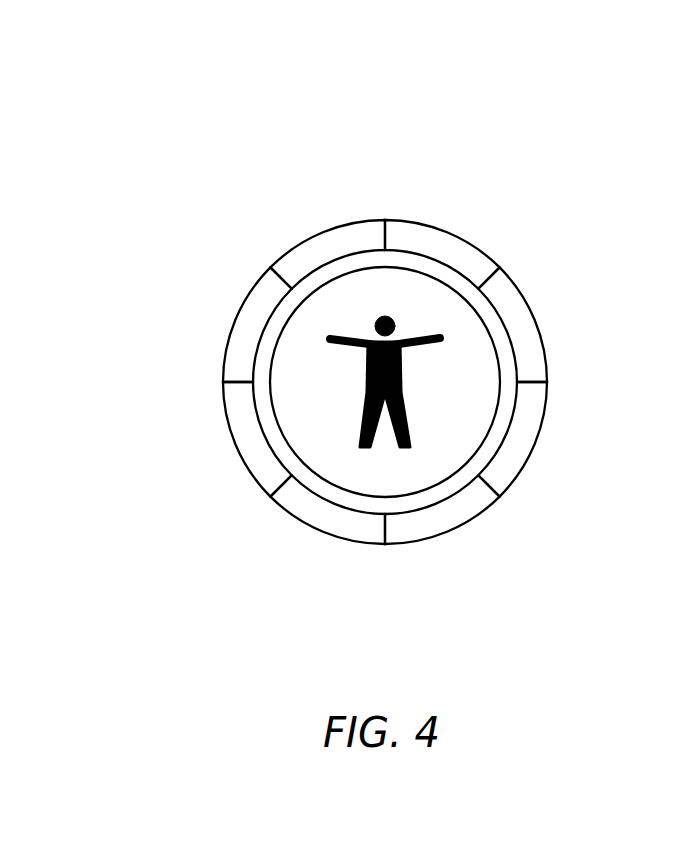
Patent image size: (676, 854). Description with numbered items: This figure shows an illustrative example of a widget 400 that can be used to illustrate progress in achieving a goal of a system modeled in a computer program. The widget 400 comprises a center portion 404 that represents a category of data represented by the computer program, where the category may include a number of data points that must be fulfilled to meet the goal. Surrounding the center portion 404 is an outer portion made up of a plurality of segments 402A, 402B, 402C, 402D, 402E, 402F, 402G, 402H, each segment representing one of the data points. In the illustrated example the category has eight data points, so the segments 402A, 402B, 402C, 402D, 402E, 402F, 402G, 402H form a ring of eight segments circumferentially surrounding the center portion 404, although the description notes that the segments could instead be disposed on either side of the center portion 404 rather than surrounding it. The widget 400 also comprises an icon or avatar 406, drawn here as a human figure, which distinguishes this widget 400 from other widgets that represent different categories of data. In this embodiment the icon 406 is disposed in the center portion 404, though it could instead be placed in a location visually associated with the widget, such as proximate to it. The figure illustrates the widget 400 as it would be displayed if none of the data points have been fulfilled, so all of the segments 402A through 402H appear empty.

The widget 400 is at (449, 154).
The segment 402A is at (460, 240).
The segment 402B is at (529, 308).
The segment 402C is at (533, 447).
The segment 402D is at (462, 525).
The segment 402E is at (313, 530).
The segment 402F is at (245, 460).
The segment 402G is at (240, 298).
The segment 402H is at (340, 224).
The center portion 404 is at (478, 370).
The icon 406 is at (370, 392).